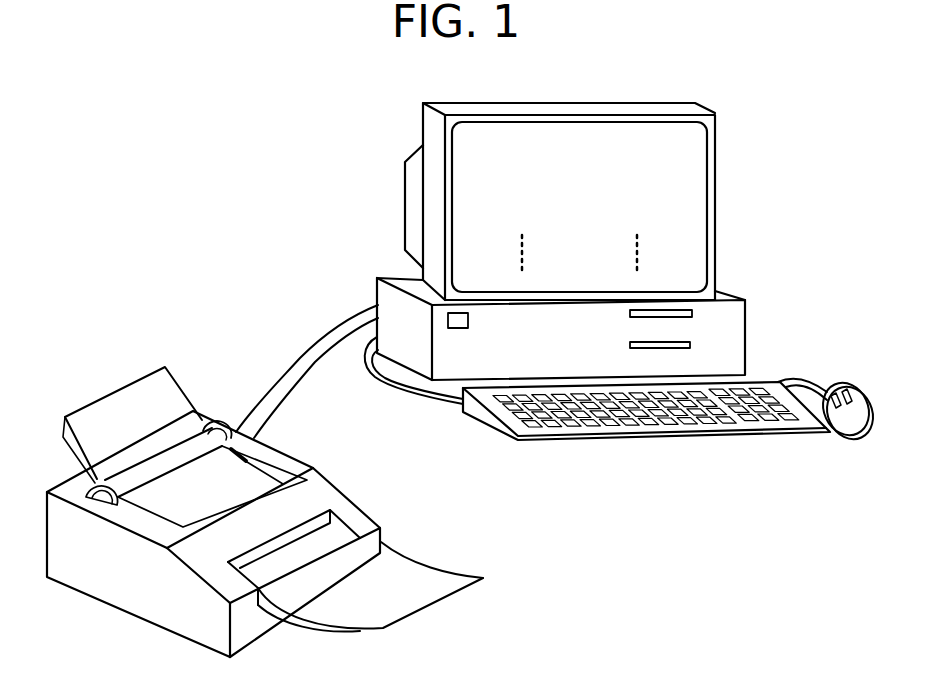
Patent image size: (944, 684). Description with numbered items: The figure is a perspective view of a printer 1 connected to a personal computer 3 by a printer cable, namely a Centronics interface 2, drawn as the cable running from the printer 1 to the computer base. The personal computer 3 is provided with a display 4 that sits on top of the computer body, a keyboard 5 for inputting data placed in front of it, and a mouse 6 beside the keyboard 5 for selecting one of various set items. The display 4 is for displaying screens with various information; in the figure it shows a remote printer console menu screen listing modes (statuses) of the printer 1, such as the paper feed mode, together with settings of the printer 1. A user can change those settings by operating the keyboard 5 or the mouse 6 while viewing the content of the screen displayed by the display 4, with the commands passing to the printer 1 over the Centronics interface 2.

The printer 1 is at (353, 513).
The Centronics interface 2 is at (338, 325).
The personal computer 3 is at (389, 229).
The display 4 is at (698, 197).
The keyboard 5 is at (685, 428).
The mouse 6 is at (845, 437).